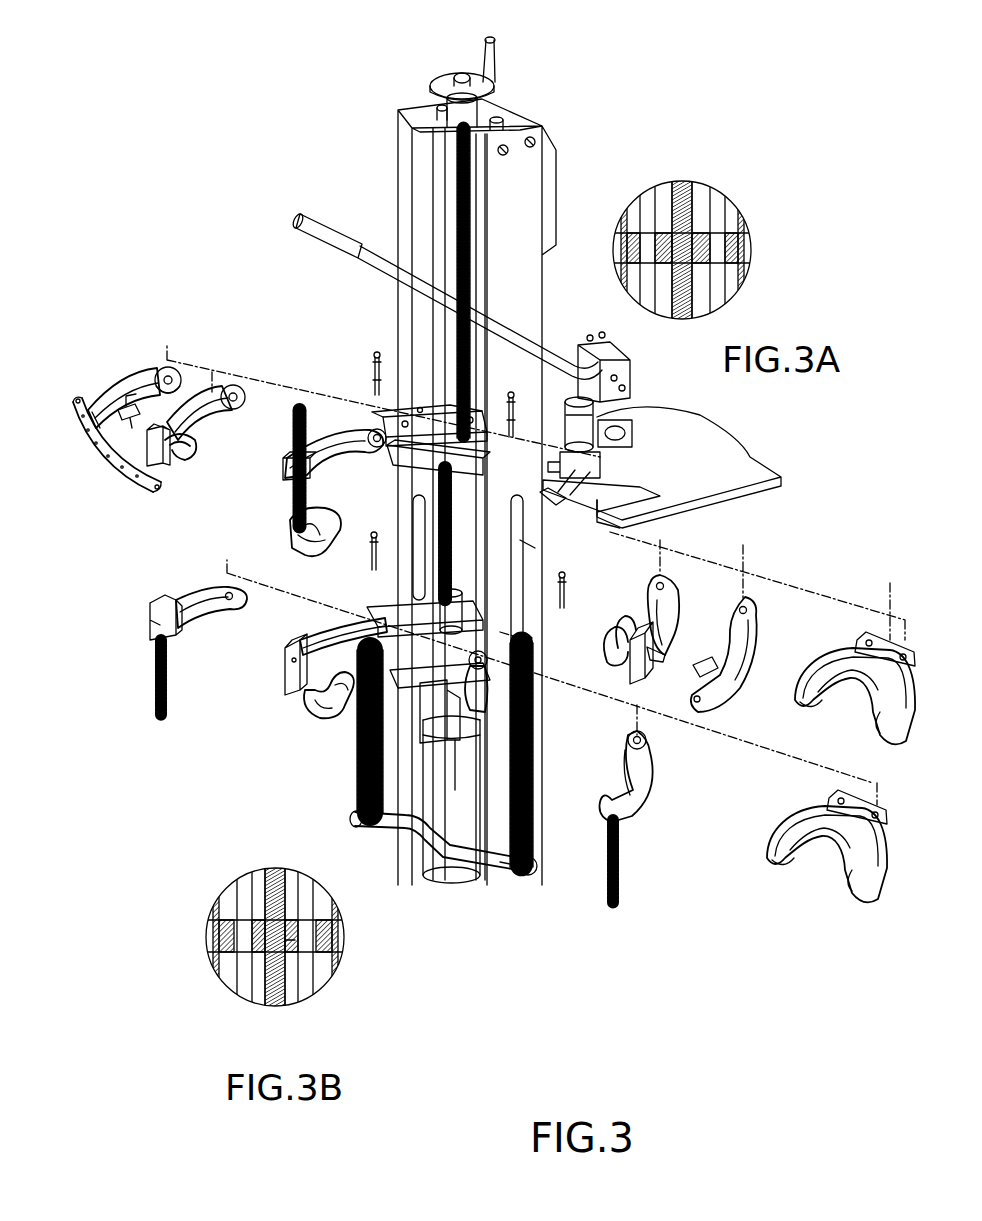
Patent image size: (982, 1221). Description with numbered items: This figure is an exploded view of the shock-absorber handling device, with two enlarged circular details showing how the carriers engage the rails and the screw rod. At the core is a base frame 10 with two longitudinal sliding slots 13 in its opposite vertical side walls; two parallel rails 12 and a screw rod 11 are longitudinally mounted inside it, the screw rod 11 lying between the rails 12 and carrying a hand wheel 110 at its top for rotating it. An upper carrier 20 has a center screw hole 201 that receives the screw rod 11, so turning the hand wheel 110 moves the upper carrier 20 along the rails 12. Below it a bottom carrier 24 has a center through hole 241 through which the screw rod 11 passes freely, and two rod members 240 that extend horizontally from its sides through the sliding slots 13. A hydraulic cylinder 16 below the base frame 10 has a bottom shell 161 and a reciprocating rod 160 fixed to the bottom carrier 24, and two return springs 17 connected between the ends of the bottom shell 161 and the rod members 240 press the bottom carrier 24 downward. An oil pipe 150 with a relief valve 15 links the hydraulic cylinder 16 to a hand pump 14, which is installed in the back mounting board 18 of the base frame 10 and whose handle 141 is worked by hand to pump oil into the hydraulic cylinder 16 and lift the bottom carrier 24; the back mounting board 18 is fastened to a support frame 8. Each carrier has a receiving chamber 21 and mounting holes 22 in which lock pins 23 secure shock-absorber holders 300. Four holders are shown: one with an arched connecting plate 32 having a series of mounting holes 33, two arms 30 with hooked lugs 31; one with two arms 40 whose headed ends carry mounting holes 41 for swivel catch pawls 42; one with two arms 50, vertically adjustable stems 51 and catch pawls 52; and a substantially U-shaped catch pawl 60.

In FIG. 3, the support frame 8 is at (735, 456).
In FIG. 3, the base frame 10 is at (525, 173).
In FIG. 3, the screw rod 11 is at (440, 192).
In FIG. 3A, the screw rod 11 is at (683, 185).
In FIG. 3B, the screw rod 11 is at (265, 990).
In FIG. 3, the rails 12 is at (435, 200).
In FIG. 3A, the rails 12 is at (648, 192).
In FIG. 3B, the rails 12 is at (248, 878).
In FIG. 3, the sliding slots 13 is at (535, 548).
In FIG. 3, the hand pump 14 is at (630, 380).
In FIG. 3, the relief valve 15 is at (660, 505).
In FIG. 3, the hydraulic cylinder 16 is at (440, 850).
In FIG. 3, the return springs 17 is at (530, 870).
In FIG. 3, the back mounting board 18 is at (630, 475).
In FIG. 3, the upper carrier 20 is at (417, 410).
In FIG. 3, the receiving chamber 21 is at (423, 455).
In FIG. 3, the mounting holes 22 is at (396, 398).
In FIG. 3, the lock pins 23 is at (372, 372).
In FIG. 3, the bottom carrier 24 is at (363, 730).
In FIG. 3B, the bottom carrier 24 is at (213, 938).
In FIG. 3, the arms 30 is at (142, 355).
In FIG. 3, the hooked lugs 31 is at (128, 400).
In FIG. 3, the arched connecting plate 32 is at (128, 495).
In FIG. 3, the mounting holes 33 is at (100, 450).
In FIG. 3, the arms 40 is at (215, 422).
In FIG. 3, the mounting holes 41 is at (196, 455).
In FIG. 3, the swivel catch pawls 42 is at (184, 466).
In FIG. 3, the arms 50 is at (337, 432).
In FIG. 3, the stems 51 is at (292, 512).
In FIG. 3, the catch pawls 52 is at (300, 548).
In FIG. 3, the U-shaped catch pawl 60 is at (797, 705).
In FIG. 3, the hand wheel 110 is at (492, 88).
In FIG. 3, the handle 141 is at (322, 218).
In FIG. 3, the oil pipe 150 is at (490, 660).
In FIG. 3, the reciprocating rod 160 is at (402, 835).
In FIG. 3, the bottom shell 161 is at (497, 873).
In FIG. 3A, the center screw hole 201 is at (700, 215).
In FIG. 3, the rod members 240 is at (500, 690).
In FIG. 3B, the center through hole 241 is at (285, 955).
In FIG. 3, the shock-absorber holders 300 is at (175, 362).